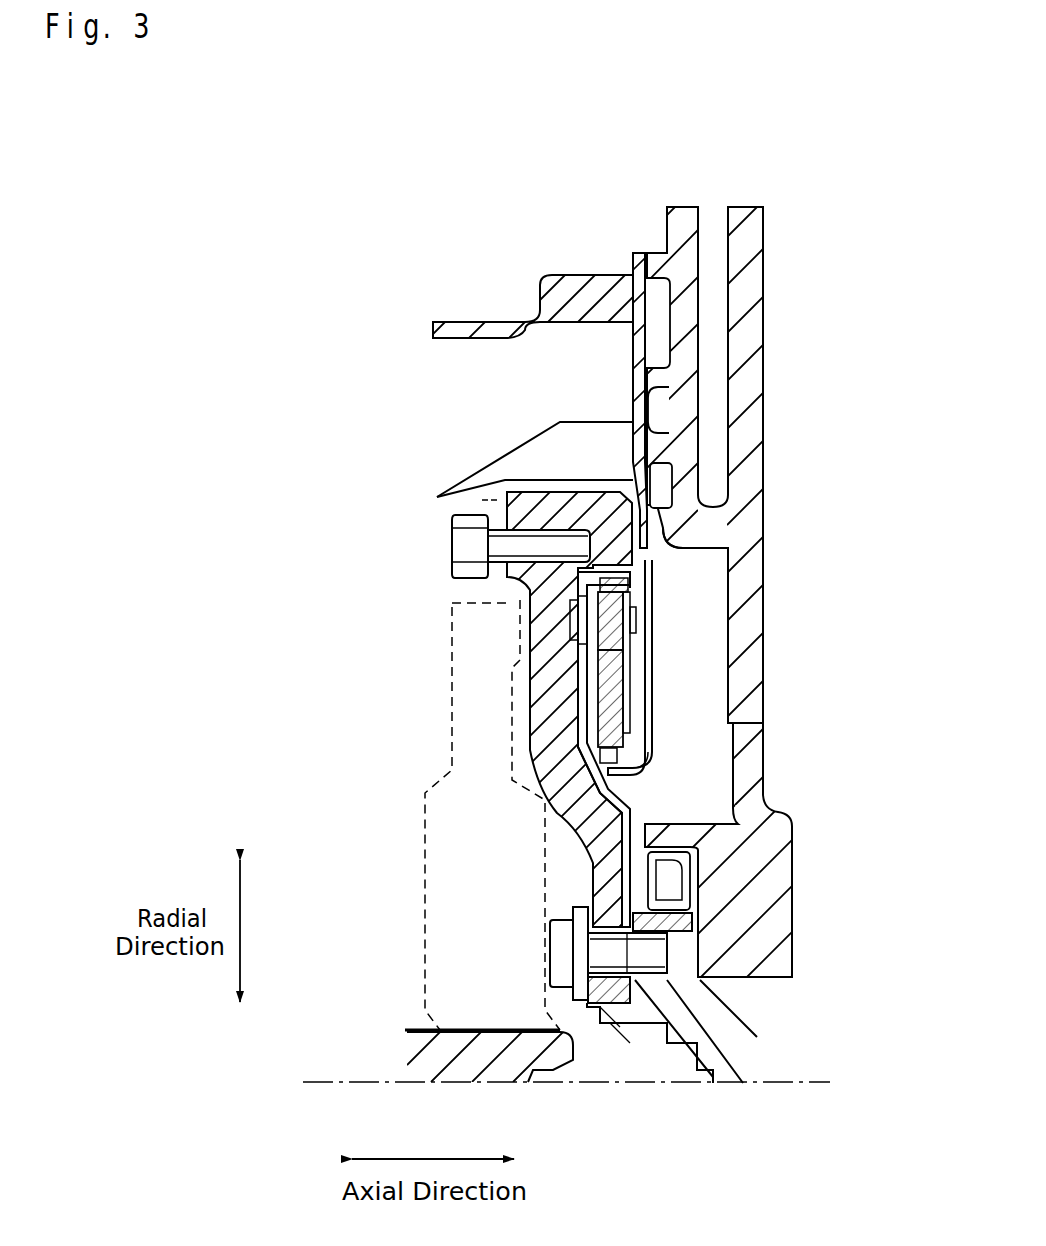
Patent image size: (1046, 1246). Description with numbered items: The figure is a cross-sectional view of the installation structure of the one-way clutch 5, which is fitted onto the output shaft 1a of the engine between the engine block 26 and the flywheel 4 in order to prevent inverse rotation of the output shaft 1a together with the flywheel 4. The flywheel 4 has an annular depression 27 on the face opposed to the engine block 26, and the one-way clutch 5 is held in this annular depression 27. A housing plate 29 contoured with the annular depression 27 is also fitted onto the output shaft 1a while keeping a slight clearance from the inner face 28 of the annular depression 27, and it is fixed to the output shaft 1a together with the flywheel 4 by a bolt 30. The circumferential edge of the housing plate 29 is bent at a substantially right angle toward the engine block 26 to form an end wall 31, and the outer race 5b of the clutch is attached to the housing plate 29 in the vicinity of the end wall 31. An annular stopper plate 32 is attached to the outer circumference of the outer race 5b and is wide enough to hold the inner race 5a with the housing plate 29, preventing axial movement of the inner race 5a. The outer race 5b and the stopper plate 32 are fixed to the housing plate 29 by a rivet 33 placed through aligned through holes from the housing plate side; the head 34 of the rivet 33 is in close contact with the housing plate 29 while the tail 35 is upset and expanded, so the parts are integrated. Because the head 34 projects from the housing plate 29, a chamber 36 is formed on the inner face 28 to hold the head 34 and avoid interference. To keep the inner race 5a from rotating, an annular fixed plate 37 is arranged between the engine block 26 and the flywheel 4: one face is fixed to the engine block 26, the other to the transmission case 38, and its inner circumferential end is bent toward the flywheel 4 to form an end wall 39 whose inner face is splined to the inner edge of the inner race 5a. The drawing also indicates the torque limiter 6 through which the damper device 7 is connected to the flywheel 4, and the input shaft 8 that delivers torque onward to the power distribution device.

The output shaft 1a is at (743, 1037).
The flywheel 4 is at (540, 697).
The one-way clutch 5 is at (640, 653).
The inner race 5a is at (612, 745).
The outer race 5b is at (650, 598).
The torque limiter 6 is at (450, 668).
The damper device 7 is at (422, 888).
The input shaft 8 is at (507, 1070).
The engine block 26 is at (682, 227).
The annular depression 27 is at (640, 667).
The inner face 28 is at (582, 737).
The housing plate 29 is at (625, 806).
The bolt 30 is at (567, 975).
The end wall 31 is at (650, 572).
The stopper plate 32 is at (660, 693).
The rivet 33 is at (640, 624).
The head 34 is at (583, 630).
The tail 35 is at (640, 613).
The chamber 36 is at (570, 606).
The fixed plate 37 is at (640, 350).
The transmission case 38 is at (588, 292).
The end wall 39 is at (653, 772).